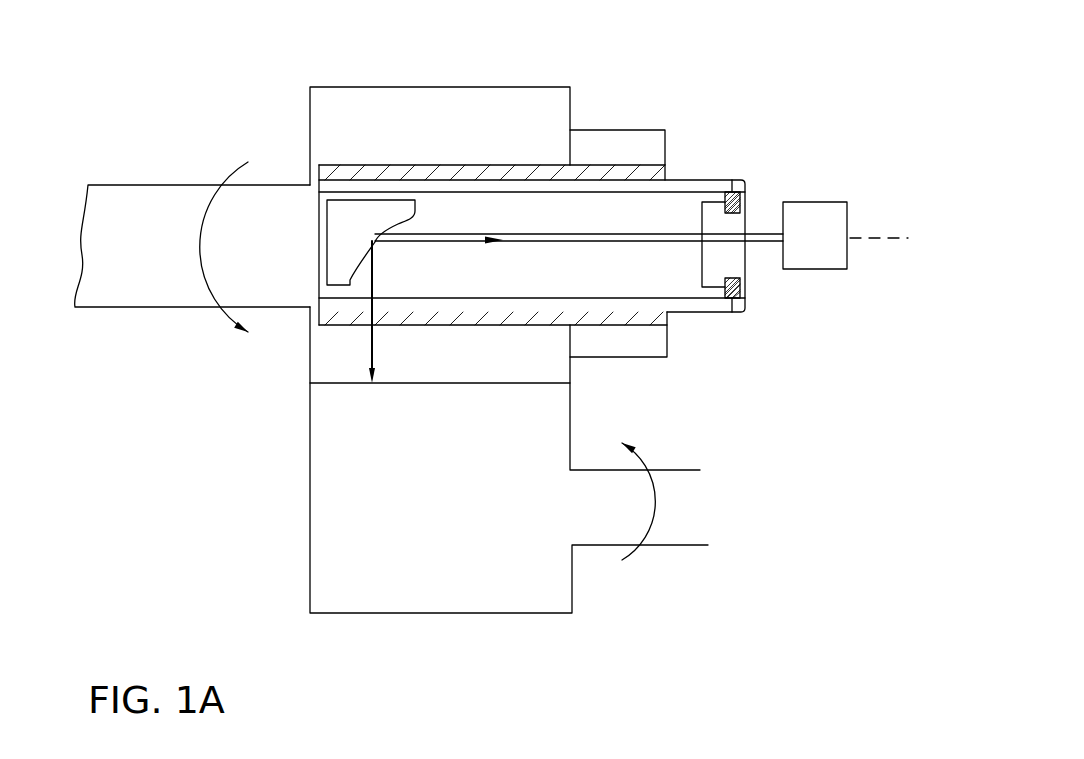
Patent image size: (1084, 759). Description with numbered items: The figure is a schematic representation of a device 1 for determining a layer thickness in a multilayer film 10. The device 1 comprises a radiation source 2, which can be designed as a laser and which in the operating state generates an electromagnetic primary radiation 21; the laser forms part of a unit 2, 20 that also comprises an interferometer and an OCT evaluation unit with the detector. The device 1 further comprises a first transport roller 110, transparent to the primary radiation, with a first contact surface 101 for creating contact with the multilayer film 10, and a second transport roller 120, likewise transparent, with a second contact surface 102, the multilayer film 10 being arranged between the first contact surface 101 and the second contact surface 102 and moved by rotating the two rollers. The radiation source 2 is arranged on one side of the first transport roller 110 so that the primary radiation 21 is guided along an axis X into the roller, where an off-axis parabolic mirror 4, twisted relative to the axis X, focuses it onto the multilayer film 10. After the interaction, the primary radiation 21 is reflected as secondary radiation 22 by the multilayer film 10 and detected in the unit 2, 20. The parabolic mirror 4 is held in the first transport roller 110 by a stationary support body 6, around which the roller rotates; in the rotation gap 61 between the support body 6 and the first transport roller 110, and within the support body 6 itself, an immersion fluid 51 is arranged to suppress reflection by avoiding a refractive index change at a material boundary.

The device 1 is at (790, 147).
The radiation source 2 is at (828, 267).
The unit 20 is at (820, 260).
The parabolic mirror 4 is at (340, 217).
The support body 6 is at (543, 233).
The multilayer film 10 is at (372, 383).
The electromagnetic primary radiation 21 is at (723, 242).
The electromagnetic secondary radiation 22 is at (475, 233).
The immersion fluid 51 is at (634, 123).
The rotation gap 61 is at (637, 170).
The first contact surface 101 is at (340, 105).
The first transport roller 110 is at (322, 177).
The second contact surface 102 is at (387, 597).
The second transport roller 120 is at (473, 485).
The axis X is at (893, 240).